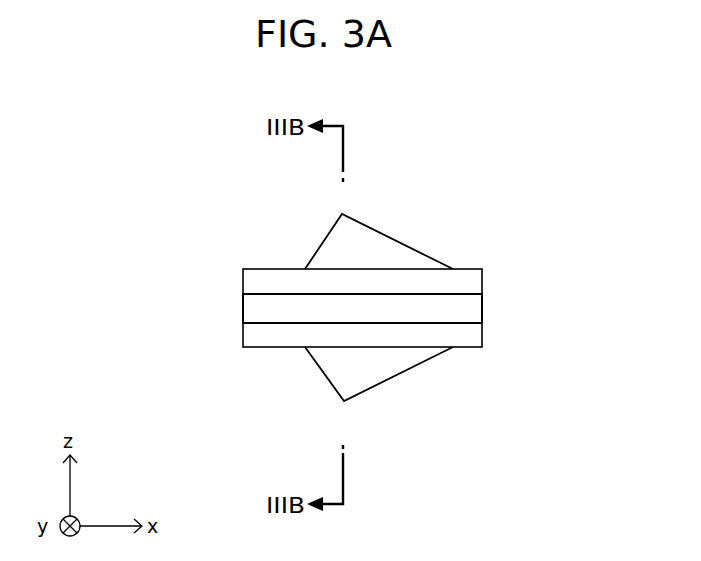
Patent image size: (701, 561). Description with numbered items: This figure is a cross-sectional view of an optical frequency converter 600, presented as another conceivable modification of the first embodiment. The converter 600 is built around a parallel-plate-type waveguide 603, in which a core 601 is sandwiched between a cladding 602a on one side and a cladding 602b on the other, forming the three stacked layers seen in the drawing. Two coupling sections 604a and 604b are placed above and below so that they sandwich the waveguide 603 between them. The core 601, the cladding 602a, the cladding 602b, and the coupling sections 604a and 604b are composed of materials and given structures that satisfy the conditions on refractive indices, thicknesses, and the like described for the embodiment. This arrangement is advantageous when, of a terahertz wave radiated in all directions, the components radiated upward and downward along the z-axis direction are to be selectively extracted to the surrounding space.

The optical frequency converter 600 is at (145, 422).
The core 601 is at (252, 312).
The cladding 602a is at (286, 273).
The cladding 602b is at (282, 337).
The parallel-plate-type waveguide 603 is at (492, 263).
The coupling section 604a is at (378, 243).
The coupling section 604b is at (387, 375).